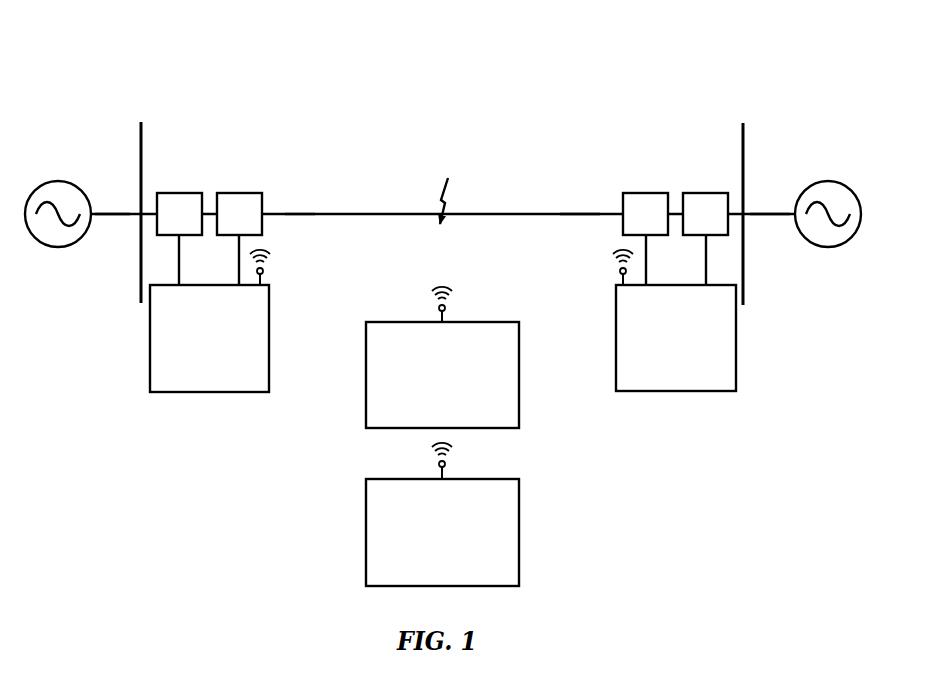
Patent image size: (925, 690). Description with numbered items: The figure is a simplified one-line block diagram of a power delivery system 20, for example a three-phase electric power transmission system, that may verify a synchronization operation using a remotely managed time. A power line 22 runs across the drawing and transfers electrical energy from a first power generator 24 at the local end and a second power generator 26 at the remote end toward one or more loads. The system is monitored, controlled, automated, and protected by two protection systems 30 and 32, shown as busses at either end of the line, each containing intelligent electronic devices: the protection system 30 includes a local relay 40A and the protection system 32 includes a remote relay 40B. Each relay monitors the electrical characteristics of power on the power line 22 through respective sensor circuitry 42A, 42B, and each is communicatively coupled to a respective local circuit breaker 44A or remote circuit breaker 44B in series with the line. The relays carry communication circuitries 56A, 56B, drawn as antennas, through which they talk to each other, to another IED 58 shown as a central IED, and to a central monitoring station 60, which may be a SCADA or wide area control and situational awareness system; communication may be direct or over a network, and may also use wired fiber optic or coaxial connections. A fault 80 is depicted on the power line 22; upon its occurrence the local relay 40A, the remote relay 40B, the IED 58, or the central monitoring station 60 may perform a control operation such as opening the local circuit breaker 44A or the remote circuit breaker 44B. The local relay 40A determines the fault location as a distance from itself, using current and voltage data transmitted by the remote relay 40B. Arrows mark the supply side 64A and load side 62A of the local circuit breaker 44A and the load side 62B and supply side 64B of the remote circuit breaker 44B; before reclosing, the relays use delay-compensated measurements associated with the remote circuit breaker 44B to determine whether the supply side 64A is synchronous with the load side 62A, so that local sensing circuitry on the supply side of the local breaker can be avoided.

The power delivery system 20 is at (700, 52).
The power line 22 is at (333, 213).
The first power generator 24 is at (57, 180).
The second power generator 26 is at (827, 181).
The protection system 30 is at (265, 140).
The protection system 32 is at (615, 142).
The local relay 40A is at (270, 337).
The remote relay 40B is at (737, 337).
The sensor circuitry 42A is at (173, 193).
The sensor circuitry 42B is at (706, 193).
The local circuit breaker 44A is at (243, 193).
The remote circuit breaker 44B is at (646, 193).
The communication circuitry 56A is at (264, 270).
The communication circuitry 56B is at (619, 270).
The IED 58 is at (520, 372).
The central monitoring station 60 is at (520, 530).
The load side 62A is at (300, 211).
The load side 62B is at (766, 219).
The supply side 64A is at (118, 217).
The supply side 64B is at (578, 211).
The fault 80 is at (447, 177).